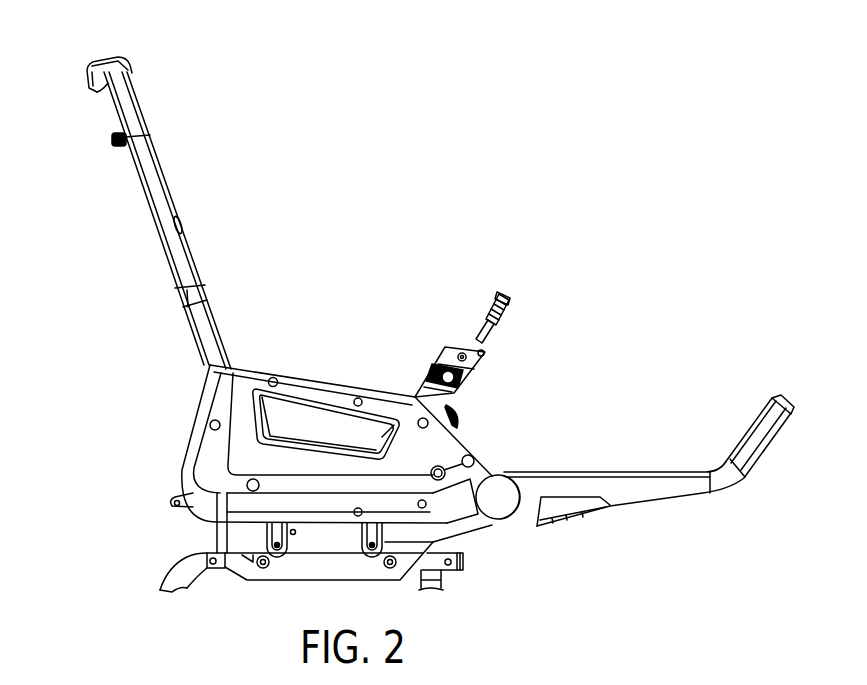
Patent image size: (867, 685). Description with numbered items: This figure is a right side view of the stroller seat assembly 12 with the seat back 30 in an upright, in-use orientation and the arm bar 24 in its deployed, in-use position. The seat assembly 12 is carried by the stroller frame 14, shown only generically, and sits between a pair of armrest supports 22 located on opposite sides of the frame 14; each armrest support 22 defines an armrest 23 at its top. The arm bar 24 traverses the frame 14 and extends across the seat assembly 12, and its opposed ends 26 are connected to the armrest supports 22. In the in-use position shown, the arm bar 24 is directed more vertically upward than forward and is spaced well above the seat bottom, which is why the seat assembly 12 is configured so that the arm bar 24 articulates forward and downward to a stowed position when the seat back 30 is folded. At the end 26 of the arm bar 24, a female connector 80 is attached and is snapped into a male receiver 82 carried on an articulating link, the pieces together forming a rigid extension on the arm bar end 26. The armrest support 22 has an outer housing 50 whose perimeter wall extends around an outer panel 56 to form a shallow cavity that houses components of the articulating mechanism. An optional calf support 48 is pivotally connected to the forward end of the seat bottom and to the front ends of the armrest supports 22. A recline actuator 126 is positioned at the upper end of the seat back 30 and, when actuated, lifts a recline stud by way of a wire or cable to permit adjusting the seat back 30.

The stroller seat assembly 12 is at (438, 240).
The frame 14 is at (167, 571).
The armrest support 22 is at (187, 437).
The armrest 23 is at (300, 388).
The arm bar 24 is at (507, 302).
The end 26 is at (484, 351).
The seat back 30 is at (170, 186).
The calf support 48 is at (737, 488).
The outer housing 50 is at (443, 452).
The outer panel 56 is at (465, 448).
The female connector 80 is at (431, 364).
The male receiver 82 is at (428, 397).
The recline actuator 126 is at (93, 76).